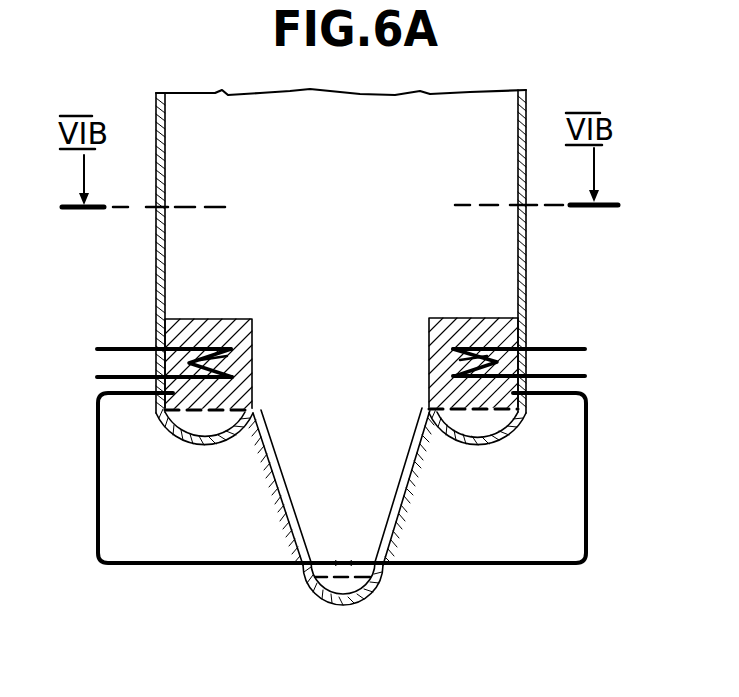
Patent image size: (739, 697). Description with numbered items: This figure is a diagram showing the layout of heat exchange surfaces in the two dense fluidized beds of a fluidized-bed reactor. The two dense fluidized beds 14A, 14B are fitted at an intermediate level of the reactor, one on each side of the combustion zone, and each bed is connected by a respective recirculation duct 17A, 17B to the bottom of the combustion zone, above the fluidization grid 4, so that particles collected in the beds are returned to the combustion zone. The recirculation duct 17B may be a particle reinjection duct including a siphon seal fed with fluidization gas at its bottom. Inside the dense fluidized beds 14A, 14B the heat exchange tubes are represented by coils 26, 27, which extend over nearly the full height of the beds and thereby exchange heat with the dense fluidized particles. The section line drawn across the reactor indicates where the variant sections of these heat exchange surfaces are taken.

The fluidization grid 4 is at (333, 577).
The dense fluidized bed 14A is at (215, 330).
The dense fluidized bed 14B is at (478, 330).
The coil 26 is at (218, 358).
The coil 27 is at (473, 363).
The recirculation duct 17A is at (100, 490).
The recirculation duct 17B is at (585, 477).